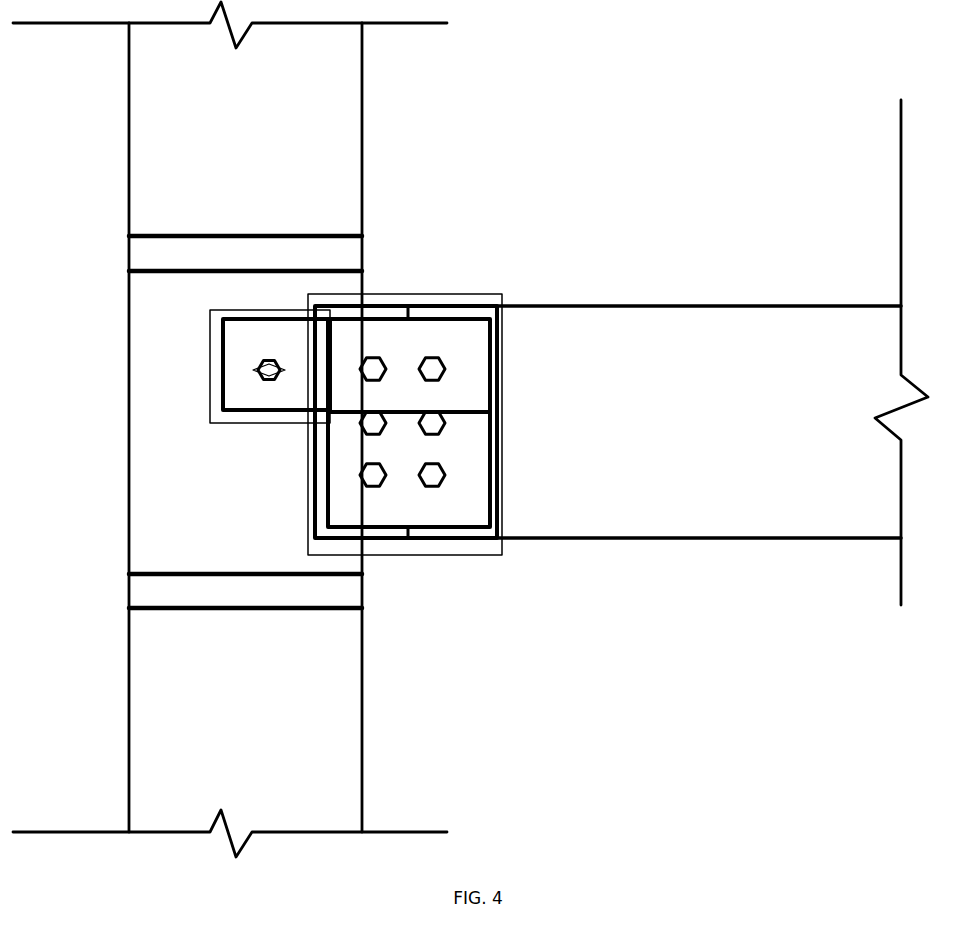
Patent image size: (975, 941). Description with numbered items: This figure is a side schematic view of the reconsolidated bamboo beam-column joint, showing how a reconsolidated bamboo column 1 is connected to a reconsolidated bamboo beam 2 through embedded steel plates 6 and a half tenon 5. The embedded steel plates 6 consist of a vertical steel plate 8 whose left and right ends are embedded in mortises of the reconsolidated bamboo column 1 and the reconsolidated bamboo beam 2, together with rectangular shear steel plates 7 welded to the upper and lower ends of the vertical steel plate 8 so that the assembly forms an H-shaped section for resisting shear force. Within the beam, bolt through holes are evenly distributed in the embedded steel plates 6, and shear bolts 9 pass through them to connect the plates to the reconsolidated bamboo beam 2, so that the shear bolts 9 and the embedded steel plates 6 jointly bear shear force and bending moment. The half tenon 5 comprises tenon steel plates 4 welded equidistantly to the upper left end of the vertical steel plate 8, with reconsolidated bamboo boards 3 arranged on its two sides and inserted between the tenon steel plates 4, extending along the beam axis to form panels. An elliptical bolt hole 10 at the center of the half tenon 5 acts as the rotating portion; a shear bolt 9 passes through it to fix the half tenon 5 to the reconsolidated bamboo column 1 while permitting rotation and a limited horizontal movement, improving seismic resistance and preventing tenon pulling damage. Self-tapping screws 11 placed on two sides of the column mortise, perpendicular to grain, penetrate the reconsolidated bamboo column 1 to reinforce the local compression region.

The reconsolidated bamboo column 1 is at (311, 180).
The reconsolidated bamboo beam 2 is at (662, 370).
The reconsolidated bamboo board 3 is at (470, 352).
The tenon steel plate 4 is at (245, 395).
The half tenon 5 is at (210, 397).
The embedded steel plate 6 is at (482, 553).
The rectangular shear steel plate 7 is at (395, 317).
The vertical steel plate 8 is at (473, 475).
The shear bolt 9 is at (375, 427).
The elliptical bolt hole 10 is at (258, 370).
The self-tapping screw 11 is at (335, 270).